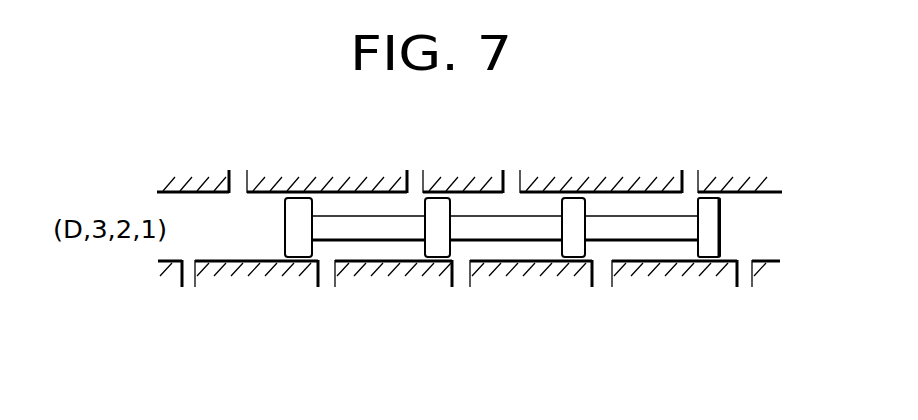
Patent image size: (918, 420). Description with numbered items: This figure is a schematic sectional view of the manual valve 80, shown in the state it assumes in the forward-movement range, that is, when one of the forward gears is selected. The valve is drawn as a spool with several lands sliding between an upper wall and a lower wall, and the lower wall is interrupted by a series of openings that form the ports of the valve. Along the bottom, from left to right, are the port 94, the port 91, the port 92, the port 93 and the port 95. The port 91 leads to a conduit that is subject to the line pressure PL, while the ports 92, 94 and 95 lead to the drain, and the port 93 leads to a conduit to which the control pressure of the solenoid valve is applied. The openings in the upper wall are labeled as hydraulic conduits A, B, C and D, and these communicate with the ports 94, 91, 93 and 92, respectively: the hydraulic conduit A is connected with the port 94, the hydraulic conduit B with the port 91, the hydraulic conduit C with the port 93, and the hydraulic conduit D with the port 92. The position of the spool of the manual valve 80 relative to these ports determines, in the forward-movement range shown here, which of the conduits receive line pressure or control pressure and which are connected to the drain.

The manual valve 80 is at (712, 229).
The port 91 is at (320, 287).
The port 92 is at (459, 278).
The port 93 is at (598, 278).
The port 94 is at (187, 287).
The port 95 is at (742, 285).
The hydraulic conduit A is at (237, 177).
The hydraulic conduit B is at (410, 175).
The hydraulic conduit C is at (688, 172).
The hydraulic conduit D is at (507, 175).